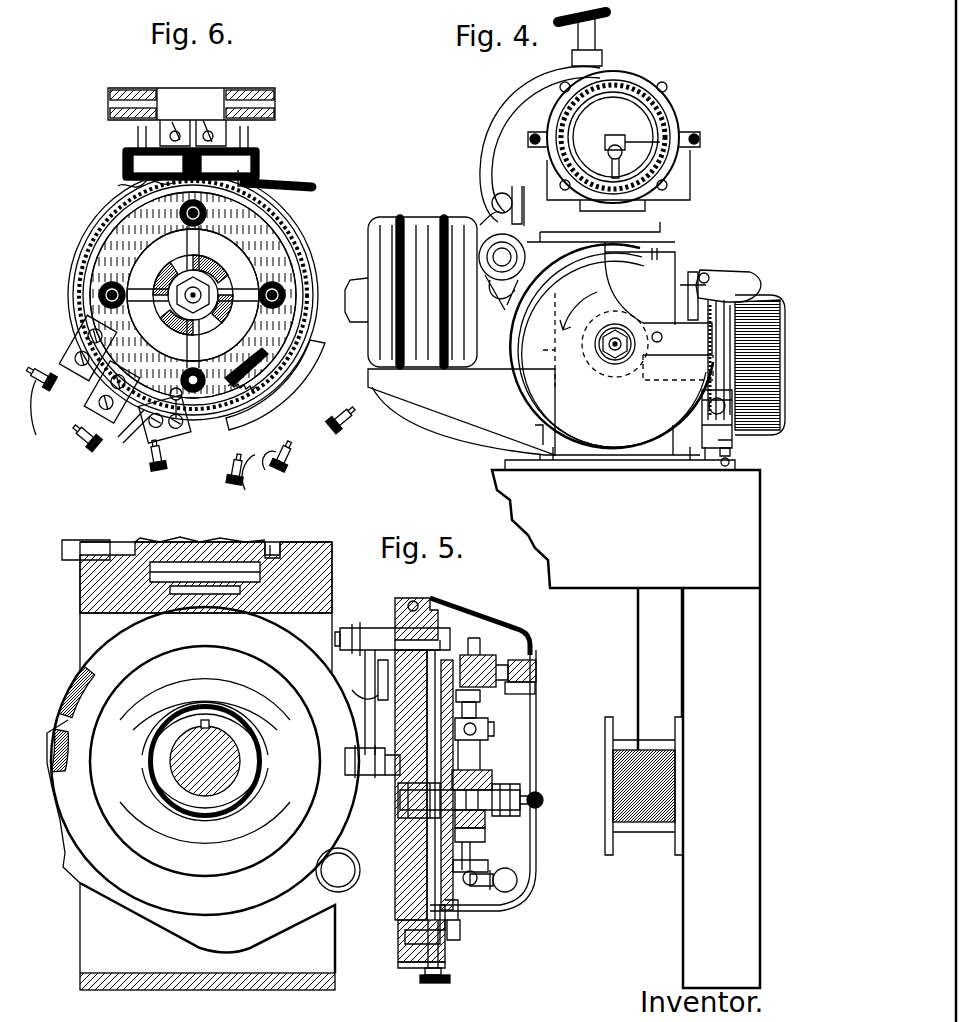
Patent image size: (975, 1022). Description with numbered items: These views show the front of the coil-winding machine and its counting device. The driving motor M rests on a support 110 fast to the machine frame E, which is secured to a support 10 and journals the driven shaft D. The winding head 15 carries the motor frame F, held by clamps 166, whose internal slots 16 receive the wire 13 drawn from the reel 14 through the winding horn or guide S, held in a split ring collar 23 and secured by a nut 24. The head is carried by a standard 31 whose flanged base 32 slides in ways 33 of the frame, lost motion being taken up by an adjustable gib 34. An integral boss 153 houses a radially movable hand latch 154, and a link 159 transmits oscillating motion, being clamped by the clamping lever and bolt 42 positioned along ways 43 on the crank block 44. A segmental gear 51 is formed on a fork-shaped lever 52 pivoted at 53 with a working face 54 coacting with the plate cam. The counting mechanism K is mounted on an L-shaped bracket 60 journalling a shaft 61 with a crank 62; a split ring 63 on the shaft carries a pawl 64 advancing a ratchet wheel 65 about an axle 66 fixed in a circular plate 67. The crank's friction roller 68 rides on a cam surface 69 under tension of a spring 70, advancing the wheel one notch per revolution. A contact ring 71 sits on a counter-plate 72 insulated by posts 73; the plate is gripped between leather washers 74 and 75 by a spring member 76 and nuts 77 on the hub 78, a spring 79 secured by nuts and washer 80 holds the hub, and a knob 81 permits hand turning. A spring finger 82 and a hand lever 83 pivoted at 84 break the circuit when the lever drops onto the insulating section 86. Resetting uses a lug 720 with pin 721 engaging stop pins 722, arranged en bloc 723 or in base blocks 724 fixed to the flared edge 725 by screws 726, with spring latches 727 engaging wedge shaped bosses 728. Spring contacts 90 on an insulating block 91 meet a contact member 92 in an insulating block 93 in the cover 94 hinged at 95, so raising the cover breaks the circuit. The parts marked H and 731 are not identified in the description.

In FIG. 4, the support 10 is at (626, 717).
In FIG. 4, the wire 13 is at (636, 660).
In FIG. 4, the reel 14 is at (610, 856).
In FIG. 4, the winding head 15 is at (676, 104).
In FIG. 4, the internal slots 16 is at (592, 108).
In FIG. 4, the split ring collar 23 is at (606, 142).
In FIG. 4, the nut 24 is at (680, 152).
In FIG. 4, the standard 31 is at (640, 226).
In FIG. 5, the standard 31 is at (236, 540).
In FIG. 4, the flanged base 32 is at (627, 254).
In FIG. 5, the flanged base 32 is at (135, 568).
In FIG. 4, the ways 33 is at (680, 246).
In FIG. 5, the ways 33 is at (96, 540).
In FIG. 4, the adjustable gib 34 is at (670, 258).
In FIG. 5, the adjustable gib 34 is at (290, 542).
In FIG. 4, the clamping lever and bolt 42 is at (490, 206).
In FIG. 4, the ways 43 is at (518, 200).
In FIG. 4, the crank block 44 is at (506, 188).
In FIG. 4, the segmental gear 51 is at (498, 302).
In FIG. 5, the fork-shaped lever 52 is at (262, 920).
In FIG. 5, the pivot 53 is at (338, 870).
In FIG. 5, the working face 54 is at (95, 664).
In FIG. 4, the L-shaped bracket 60 is at (660, 322).
In FIG. 5, the L-shaped bracket 60 is at (388, 790).
In FIG. 5, the shaft 61 is at (368, 630).
In FIG. 4, the crank 62 is at (686, 290).
In FIG. 5, the crank 62 is at (365, 728).
In FIG. 6, the split ring 63 is at (198, 120).
In FIG. 5, the split ring 63 is at (470, 612).
In FIG. 6, the pawl 64 is at (188, 224).
In FIG. 5, the pawl 64 is at (368, 680).
In FIG. 6, the ratchet wheel 65 is at (118, 226).
In FIG. 4, the ratchet wheel 65 is at (714, 338).
In FIG. 5, the ratchet wheel 65 is at (442, 892).
In FIG. 6, the axle 66 is at (205, 332).
In FIG. 5, the axle 66 is at (418, 820).
In FIG. 6, the circular plate 67 is at (82, 212).
In FIG. 5, the circular plate 67 is at (418, 862).
In FIG. 5, the friction roller 68 is at (352, 776).
In FIG. 5, the cam surface 69 is at (60, 728).
In FIG. 5, the spring 70 is at (362, 700).
In FIG. 6, the contact ring 71 is at (276, 262).
In FIG. 5, the contact ring 71 is at (480, 706).
In FIG. 6, the counter-plate 72 is at (250, 272).
In FIG. 5, the counter-plate 72 is at (470, 752).
In FIG. 6, the insulating posts 73 is at (100, 286).
In FIG. 5, the insulating posts 73 is at (488, 730).
In FIG. 5, the leather washer 74 is at (472, 850).
In FIG. 6, the leather washer 75 is at (206, 262).
In FIG. 5, the leather washer 75 is at (480, 862).
In FIG. 6, the spring member 76 is at (176, 322).
In FIG. 5, the spring member 76 is at (486, 838).
In FIG. 6, the nuts 77 is at (160, 305).
In FIG. 5, the nuts 77 is at (486, 826).
In FIG. 5, the hub 78 is at (500, 790).
In FIG. 5, the spring 79 is at (518, 782).
In FIG. 6, the nuts and washer 80 is at (172, 280).
In FIG. 5, the nuts and washer 80 is at (540, 798).
In FIG. 6, the knob 81 is at (192, 405).
In FIG. 5, the knob 81 is at (520, 890).
In FIG. 6, the spring finger 82 is at (128, 186).
In FIG. 5, the spring finger 82 is at (482, 696).
In FIG. 6, the hand lever 83 is at (272, 196).
In FIG. 6, the pivot 84 is at (258, 178).
In FIG. 6, the insulating section 86 is at (262, 378).
In FIG. 6, the spring contacts 90 is at (192, 164).
In FIG. 5, the spring contacts 90 is at (527, 645).
In FIG. 6, the insulating block 91 is at (262, 150).
In FIG. 5, the insulating block 91 is at (488, 655).
In FIG. 5, the contact member 92 is at (536, 684).
In FIG. 5, the insulating block 93 is at (536, 664).
In FIG. 5, the cover 94 is at (534, 726).
In FIG. 6, the hinge 95 is at (276, 96).
In FIG. 5, the hinge 95 is at (405, 600).
In FIG. 4, the support 110 is at (534, 412).
In FIG. 4, the boss 153 is at (600, 58).
In FIG. 4, the hand latch 154 is at (596, 30).
In FIG. 4, the link 159 is at (510, 97).
In FIG. 4, the clamps 166 is at (535, 132).
In FIG. 6, the lug 720 is at (150, 450).
In FIG. 5, the lug 720 is at (462, 936).
In FIG. 6, the pin 721 is at (152, 430).
In FIG. 5, the pin 721 is at (462, 922).
In FIG. 6, the stop pin 722 is at (72, 440).
In FIG. 4, the stop pin 722 is at (732, 462).
In FIG. 5, the stop pin 722 is at (452, 978).
In FIG. 6, the stop pins en bloc 723 is at (312, 380).
In FIG. 6, the base blocks 724 is at (68, 340).
In FIG. 4, the base blocks 724 is at (711, 419).
In FIG. 5, the base blocks 724 is at (400, 952).
In FIG. 6, the flared edge 725 is at (75, 303).
In FIG. 5, the flared edge 725 is at (404, 922).
In FIG. 6, the screws 726 is at (96, 398).
In FIG. 5, the spring latches 727 is at (424, 970).
In FIG. 5, the wedge shaped bosses 728 is at (404, 934).
In FIG. 6, the wire 731 is at (60, 364).
In FIG. 5, the driven shaft D is at (204, 800).
In FIG. 4, the machine frame E is at (580, 462).
In FIG. 5, the machine frame E is at (80, 592).
In FIG. 4, the motor frame F is at (645, 72).
In FIG. 4, the housing H is at (611, 346).
In FIG. 4, the automatic counting mechanism K is at (770, 285).
In FIG. 5, the automatic counting mechanism K is at (547, 883).
In FIG. 4, the driving motor M is at (411, 288).
In FIG. 4, the winding horn S is at (662, 168).